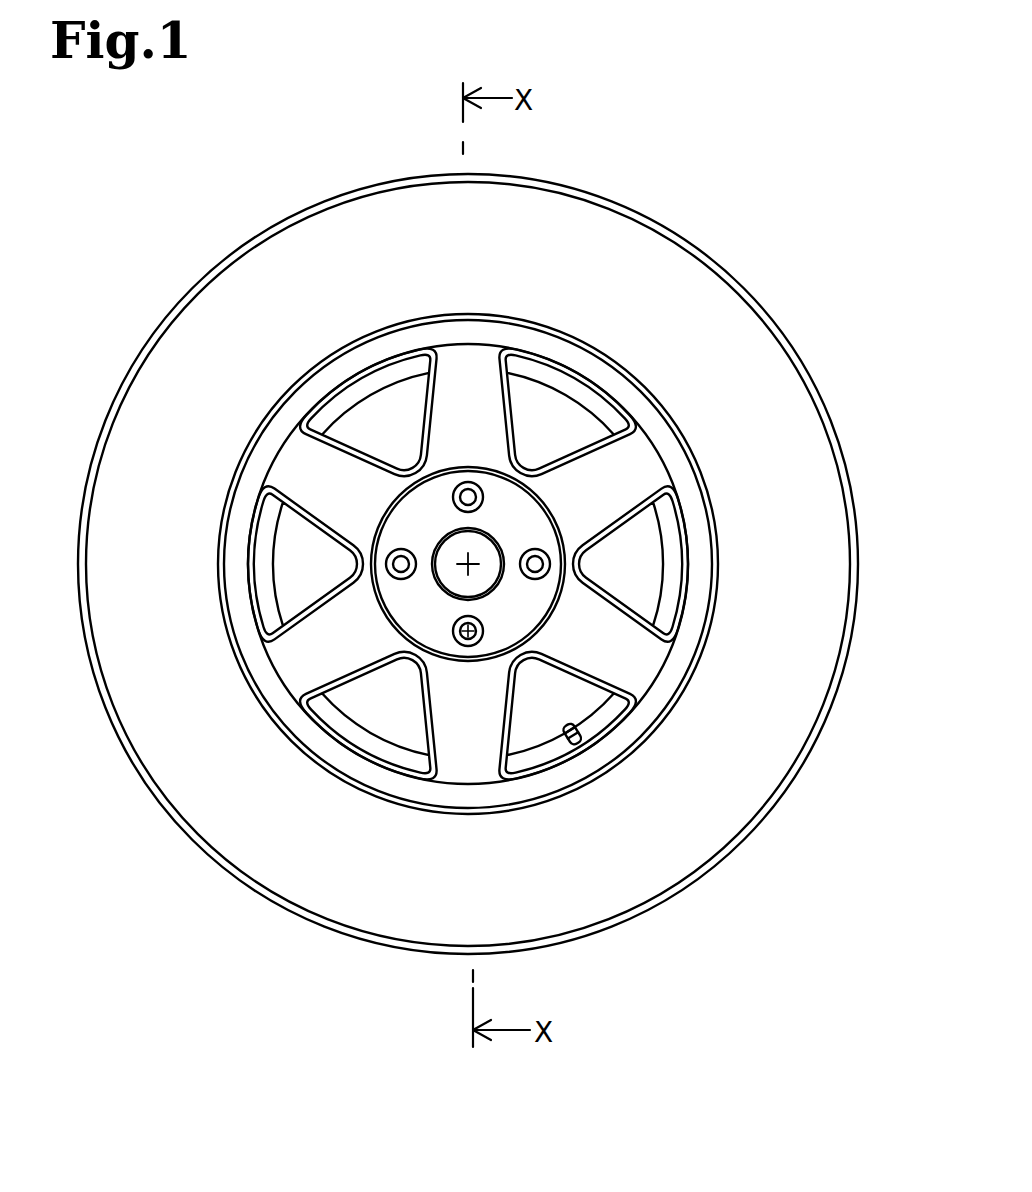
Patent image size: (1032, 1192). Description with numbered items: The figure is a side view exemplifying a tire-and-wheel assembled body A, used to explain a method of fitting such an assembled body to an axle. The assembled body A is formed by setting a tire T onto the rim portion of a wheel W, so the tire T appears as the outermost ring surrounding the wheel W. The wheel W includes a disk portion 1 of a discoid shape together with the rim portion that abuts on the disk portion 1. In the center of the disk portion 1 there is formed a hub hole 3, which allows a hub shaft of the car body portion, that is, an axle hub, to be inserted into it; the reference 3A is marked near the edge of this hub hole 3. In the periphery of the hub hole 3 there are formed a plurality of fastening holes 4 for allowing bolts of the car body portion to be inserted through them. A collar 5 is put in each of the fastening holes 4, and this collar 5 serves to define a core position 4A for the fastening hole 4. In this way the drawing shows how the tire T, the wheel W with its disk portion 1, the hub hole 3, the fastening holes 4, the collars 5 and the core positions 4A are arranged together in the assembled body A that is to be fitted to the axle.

The assembled body A is at (695, 205).
The tire T is at (598, 186).
The wheel W is at (713, 479).
The disk portion 1 is at (637, 460).
The hub hole 3 is at (487, 582).
The hub hole edge 3A is at (483, 545).
The fastening hole 4 is at (400, 574).
The core position 4A is at (467, 641).
The collar 5 is at (386, 531).